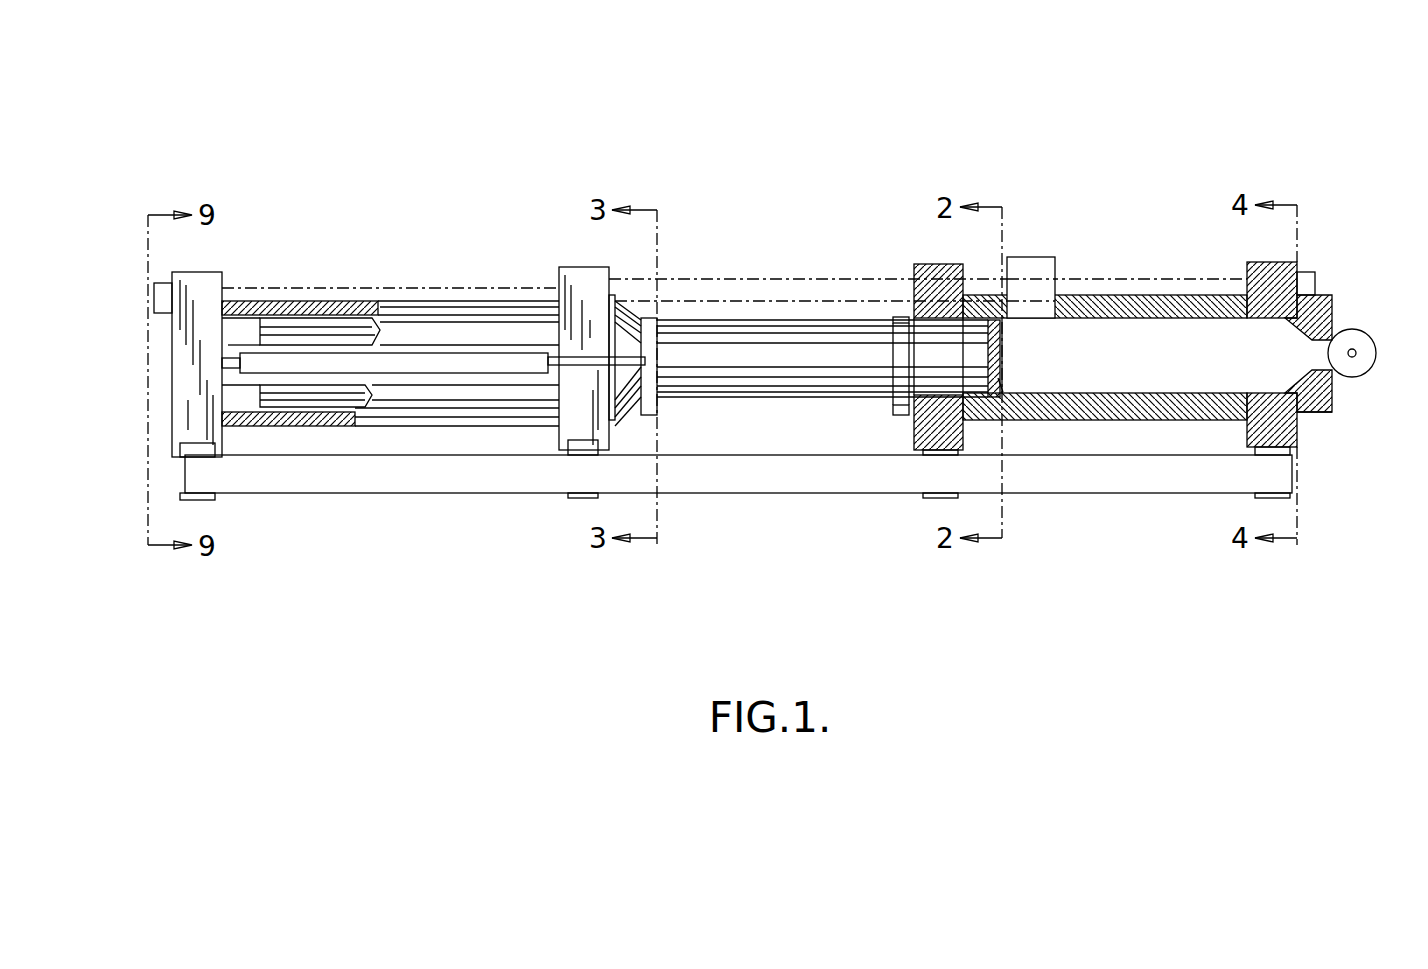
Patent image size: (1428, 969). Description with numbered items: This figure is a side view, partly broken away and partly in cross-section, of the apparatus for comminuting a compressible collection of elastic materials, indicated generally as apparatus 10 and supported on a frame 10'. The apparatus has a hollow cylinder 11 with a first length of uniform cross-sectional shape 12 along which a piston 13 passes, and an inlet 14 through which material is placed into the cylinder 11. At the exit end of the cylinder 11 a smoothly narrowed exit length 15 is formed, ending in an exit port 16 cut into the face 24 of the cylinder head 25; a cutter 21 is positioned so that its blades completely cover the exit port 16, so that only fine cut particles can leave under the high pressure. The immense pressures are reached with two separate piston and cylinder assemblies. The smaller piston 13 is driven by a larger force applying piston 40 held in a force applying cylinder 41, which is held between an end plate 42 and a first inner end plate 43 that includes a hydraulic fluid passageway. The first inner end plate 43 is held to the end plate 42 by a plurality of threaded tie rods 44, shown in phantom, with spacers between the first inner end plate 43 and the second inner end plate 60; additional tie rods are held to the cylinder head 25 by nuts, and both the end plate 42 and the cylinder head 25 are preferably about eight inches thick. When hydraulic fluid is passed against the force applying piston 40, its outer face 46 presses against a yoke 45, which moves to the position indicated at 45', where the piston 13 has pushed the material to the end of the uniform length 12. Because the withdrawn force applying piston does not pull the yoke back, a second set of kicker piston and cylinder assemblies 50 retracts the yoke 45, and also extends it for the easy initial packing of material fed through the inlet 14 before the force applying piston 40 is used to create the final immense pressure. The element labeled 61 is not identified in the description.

The apparatus for comminuting compressible materials 10 is at (787, 326).
The frame 10' is at (736, 513).
The hollow cylinder 11 is at (1128, 305).
The first length of uniform cross-sectional shape 12 is at (1065, 375).
The piston 13 is at (1000, 380).
The inlet 14 is at (1033, 263).
The smoothly narrowed exit length 15 is at (1290, 352).
The exit port 16 is at (1310, 412).
The cutter 21 is at (1367, 332).
The face 24 is at (1323, 354).
The cylinder head 25 is at (1322, 418).
The force applying piston 40 is at (327, 321).
The force applying cylinder 41 is at (447, 408).
The end plate 42 is at (216, 278).
The first inner end plate 43 is at (577, 277).
The tie rods 44 is at (437, 288).
The yoke 45 is at (698, 436).
The yoke in moved position 45' is at (863, 447).
The outer face of force applying piston 46 is at (652, 335).
The kicker piston and cylinder assemblies 50 is at (338, 366).
The second inner end plate 60 is at (856, 279).
The bearing block 61 is at (927, 264).